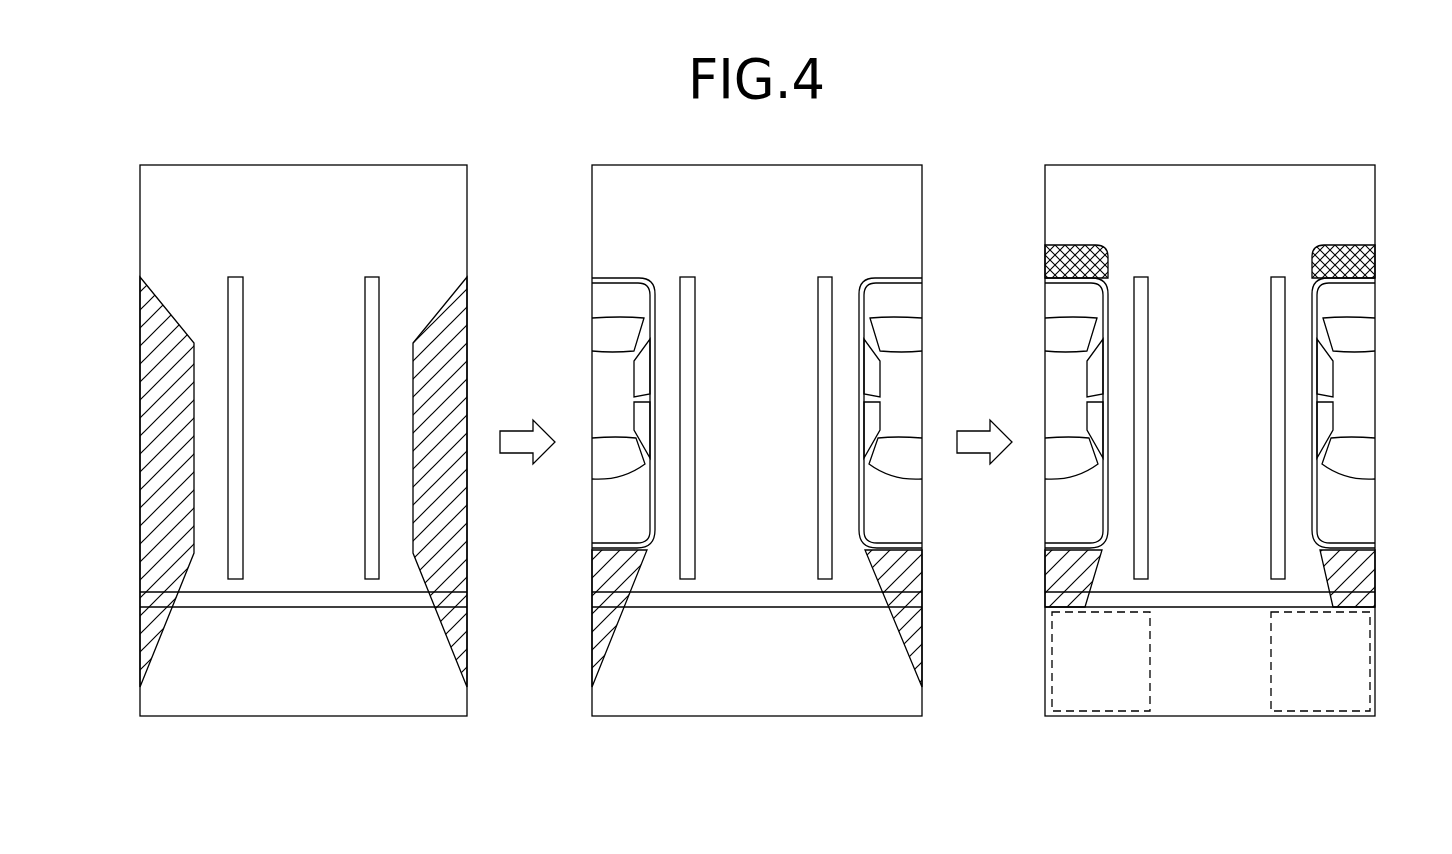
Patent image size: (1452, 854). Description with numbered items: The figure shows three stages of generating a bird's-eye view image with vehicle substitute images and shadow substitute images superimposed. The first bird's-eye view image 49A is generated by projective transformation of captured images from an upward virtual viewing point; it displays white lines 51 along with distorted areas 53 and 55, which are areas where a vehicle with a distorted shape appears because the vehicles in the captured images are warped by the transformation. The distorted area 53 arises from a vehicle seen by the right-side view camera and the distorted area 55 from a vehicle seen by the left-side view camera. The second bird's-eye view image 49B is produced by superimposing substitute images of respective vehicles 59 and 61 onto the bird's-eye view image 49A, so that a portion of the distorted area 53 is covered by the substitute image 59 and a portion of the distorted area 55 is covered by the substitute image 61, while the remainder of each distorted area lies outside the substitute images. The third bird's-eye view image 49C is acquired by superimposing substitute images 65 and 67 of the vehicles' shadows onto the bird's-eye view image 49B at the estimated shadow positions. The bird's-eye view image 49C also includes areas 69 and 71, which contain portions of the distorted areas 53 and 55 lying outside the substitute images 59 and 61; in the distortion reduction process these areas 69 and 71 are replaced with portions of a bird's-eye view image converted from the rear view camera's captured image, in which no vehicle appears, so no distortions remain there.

The bird's-eye view image 49A is at (402, 165).
The bird's-eye view image 49B is at (855, 165).
The bird's-eye view image 49C is at (1295, 165).
The white lines 51 is at (371, 318).
The distorted area 53 is at (458, 522).
The distorted area 55 is at (155, 440).
The substitute image of a vehicle 59 is at (912, 303).
The substitute image of another vehicle 61 is at (600, 303).
The substitute image of a vehicle shadow 65 is at (1365, 252).
The substitute image of a vehicle shadow 67 is at (1048, 265).
The area 69 is at (1271, 670).
The area 71 is at (1150, 670).